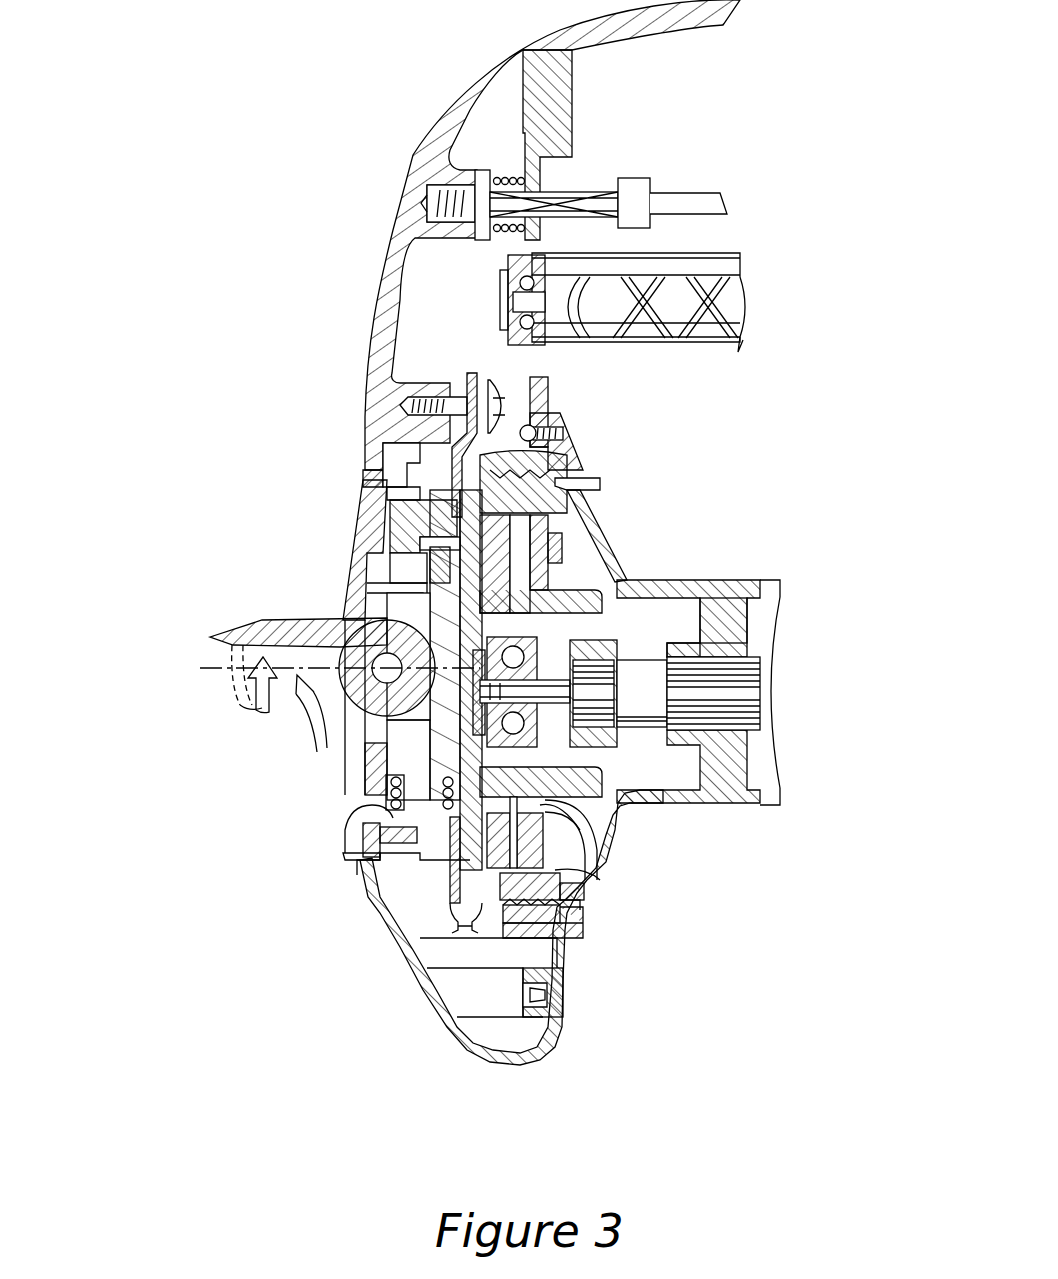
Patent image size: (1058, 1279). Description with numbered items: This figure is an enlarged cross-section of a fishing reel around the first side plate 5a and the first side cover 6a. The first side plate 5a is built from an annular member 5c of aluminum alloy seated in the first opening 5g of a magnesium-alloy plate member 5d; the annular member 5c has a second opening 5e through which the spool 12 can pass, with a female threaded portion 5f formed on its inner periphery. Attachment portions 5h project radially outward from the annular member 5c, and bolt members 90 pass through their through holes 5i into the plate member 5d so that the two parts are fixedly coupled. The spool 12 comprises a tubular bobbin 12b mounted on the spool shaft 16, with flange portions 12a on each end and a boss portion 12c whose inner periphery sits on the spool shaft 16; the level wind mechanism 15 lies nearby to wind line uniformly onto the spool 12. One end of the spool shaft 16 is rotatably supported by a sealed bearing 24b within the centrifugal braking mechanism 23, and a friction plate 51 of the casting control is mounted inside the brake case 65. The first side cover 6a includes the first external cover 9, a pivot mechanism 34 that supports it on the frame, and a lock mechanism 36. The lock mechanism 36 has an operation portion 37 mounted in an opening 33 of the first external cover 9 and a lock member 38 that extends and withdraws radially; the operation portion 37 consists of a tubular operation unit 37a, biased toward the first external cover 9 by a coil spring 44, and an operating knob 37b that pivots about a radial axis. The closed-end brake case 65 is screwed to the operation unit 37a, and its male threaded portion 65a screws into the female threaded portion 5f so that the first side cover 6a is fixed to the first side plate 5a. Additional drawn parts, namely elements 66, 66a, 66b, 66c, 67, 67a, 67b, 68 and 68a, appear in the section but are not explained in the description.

The first side cover 6a is at (360, 178).
The first external cover 9 is at (380, 243).
The bolt members 90 is at (547, 593).
The coil spring 44 is at (405, 390).
The male threaded portion 65a is at (452, 458).
The frame member 66 is at (395, 515).
The female threaded portion 5f is at (366, 470).
The lock member 38 is at (380, 515).
The lock mechanism 36 is at (350, 538).
The operation portion 37 is at (350, 555).
The operation unit 37a is at (345, 580).
The operating knob 37b is at (250, 625).
The friction plates 51 is at (470, 718).
The opening 33 is at (380, 810).
The lower plate 67b is at (410, 840).
The centrifugal braking mechanism 23 is at (430, 870).
The lower bracket 67a is at (455, 900).
The lower housing 68 is at (400, 950).
The pivot mechanism 34 is at (665, 200).
The level wind mechanism 15 is at (715, 250).
The first side plate 5a is at (572, 375).
The plate member 5d is at (540, 395).
The attachment portions 5h is at (548, 425).
The through holes 5i is at (563, 438).
The annular member 5c is at (575, 472).
The second opening 5e is at (580, 477).
The flange portions 12a is at (605, 548).
The bobbin 12b is at (712, 592).
The spool 12 is at (762, 578).
The boss portion 12c is at (700, 640).
The spool shaft 16 is at (760, 692).
The gear 66a is at (600, 735).
The housing wall 66b is at (680, 805).
The bearing 24b is at (565, 800).
The housing wall 66c is at (560, 822).
The cover 67 is at (590, 870).
The cover lip 68a is at (580, 905).
The first opening 5g is at (590, 912).
The brake case 65 is at (605, 912).